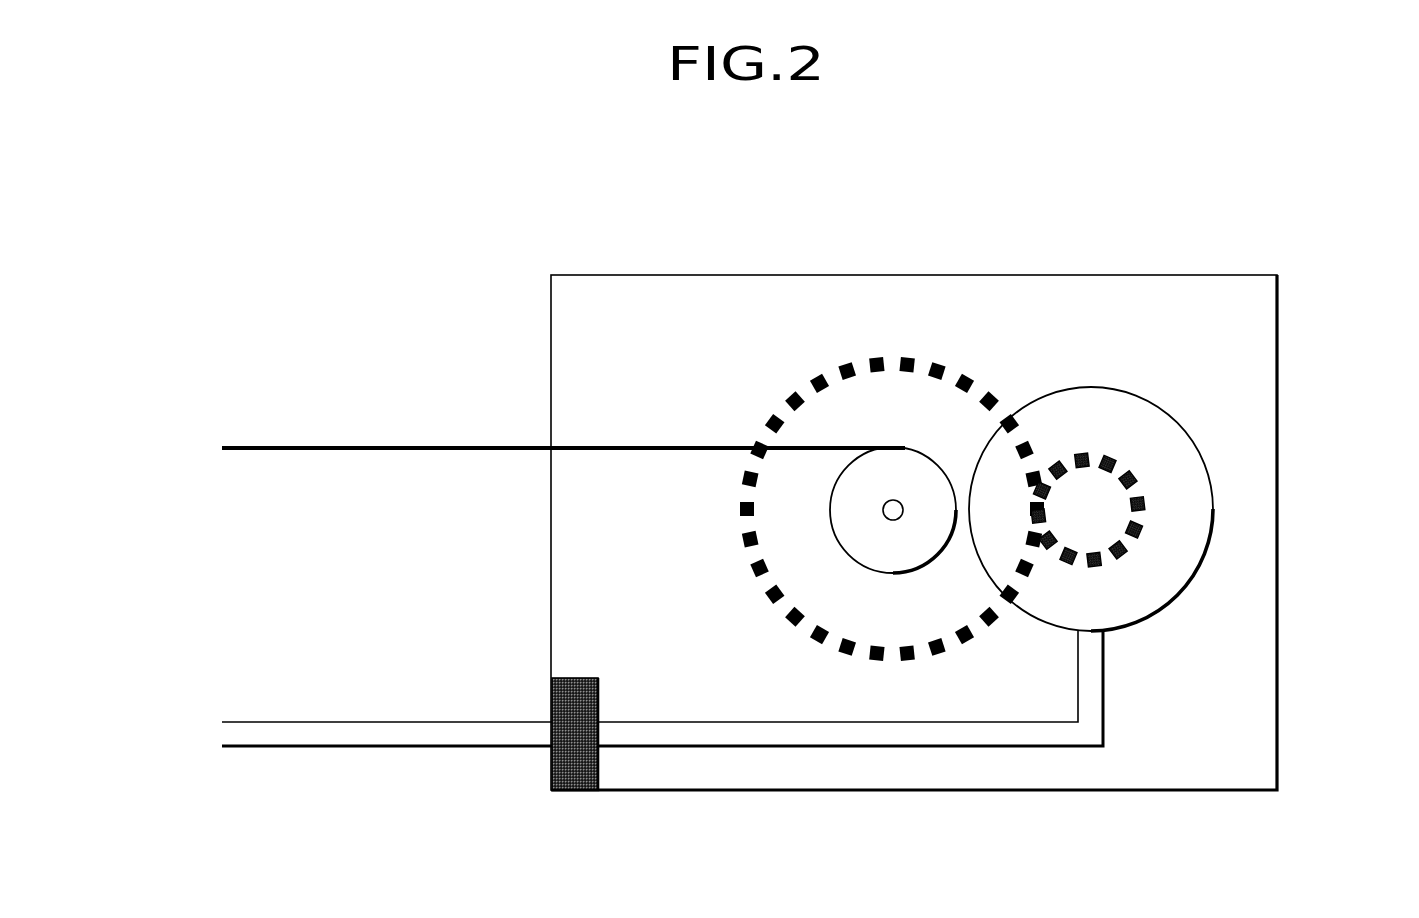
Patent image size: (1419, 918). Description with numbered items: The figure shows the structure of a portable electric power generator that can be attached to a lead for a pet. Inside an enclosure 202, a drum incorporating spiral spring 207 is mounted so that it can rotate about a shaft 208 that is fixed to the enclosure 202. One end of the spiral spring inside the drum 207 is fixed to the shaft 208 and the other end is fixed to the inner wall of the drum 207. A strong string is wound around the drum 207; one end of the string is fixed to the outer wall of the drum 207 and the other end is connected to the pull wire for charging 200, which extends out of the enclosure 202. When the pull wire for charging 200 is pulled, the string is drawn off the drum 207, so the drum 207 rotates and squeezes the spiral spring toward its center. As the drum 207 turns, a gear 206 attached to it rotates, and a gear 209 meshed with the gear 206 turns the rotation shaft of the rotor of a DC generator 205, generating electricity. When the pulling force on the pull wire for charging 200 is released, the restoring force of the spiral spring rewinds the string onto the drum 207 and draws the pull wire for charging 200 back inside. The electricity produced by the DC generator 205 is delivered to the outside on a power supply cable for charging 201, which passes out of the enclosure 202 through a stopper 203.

The pull wire for charging 200 is at (307, 445).
The power supply cable for charging 201 is at (272, 720).
The enclosure 202 is at (551, 610).
The stopper 203 is at (560, 769).
The DC generator 205 is at (1135, 420).
The gear 206 is at (902, 360).
The drum incorporating spiral spring 207 is at (913, 465).
The shaft 208 is at (883, 512).
The gear 209 is at (1083, 452).